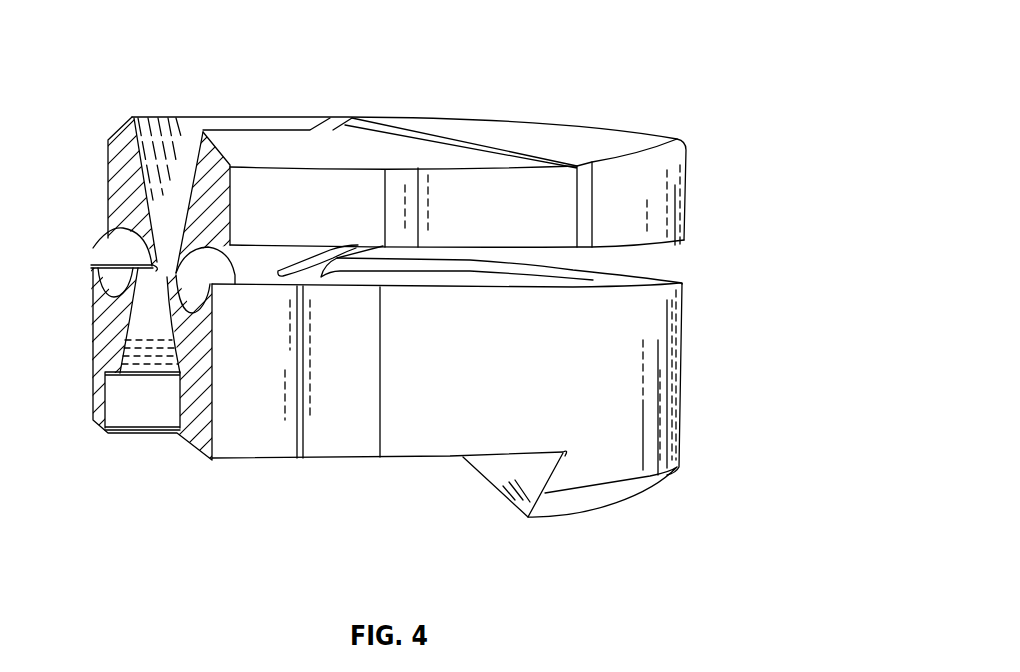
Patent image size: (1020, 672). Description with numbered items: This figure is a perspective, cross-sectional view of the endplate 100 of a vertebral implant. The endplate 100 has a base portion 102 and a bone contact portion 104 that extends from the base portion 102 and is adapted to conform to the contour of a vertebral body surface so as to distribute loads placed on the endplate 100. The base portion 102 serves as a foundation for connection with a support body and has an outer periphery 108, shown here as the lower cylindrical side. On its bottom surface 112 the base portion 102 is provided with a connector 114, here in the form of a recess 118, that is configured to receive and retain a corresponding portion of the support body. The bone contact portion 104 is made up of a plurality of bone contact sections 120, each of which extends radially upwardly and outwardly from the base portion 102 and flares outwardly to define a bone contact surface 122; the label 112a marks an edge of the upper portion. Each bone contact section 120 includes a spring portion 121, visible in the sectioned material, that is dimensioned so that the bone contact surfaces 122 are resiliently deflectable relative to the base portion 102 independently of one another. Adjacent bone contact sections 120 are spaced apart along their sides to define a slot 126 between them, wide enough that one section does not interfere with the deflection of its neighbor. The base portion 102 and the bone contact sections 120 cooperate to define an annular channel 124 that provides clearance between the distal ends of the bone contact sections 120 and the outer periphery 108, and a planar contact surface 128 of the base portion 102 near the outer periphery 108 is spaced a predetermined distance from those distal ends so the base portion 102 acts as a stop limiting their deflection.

The endplate 100 is at (118, 66).
The base portion 102 is at (680, 425).
The bone contact portion 104 is at (596, 118).
The outer periphery 108 is at (684, 326).
The bottom surface 112 is at (242, 462).
The top edge 112a is at (676, 144).
The connector 114 is at (510, 497).
The recess 118 is at (462, 457).
The bone contact section 120 is at (437, 167).
The spring portion 121 is at (97, 247).
The bone contact surface 122 is at (363, 150).
The annular channel 124 is at (502, 248).
The slot 126 is at (578, 188).
The planar contact surface 128 is at (648, 281).